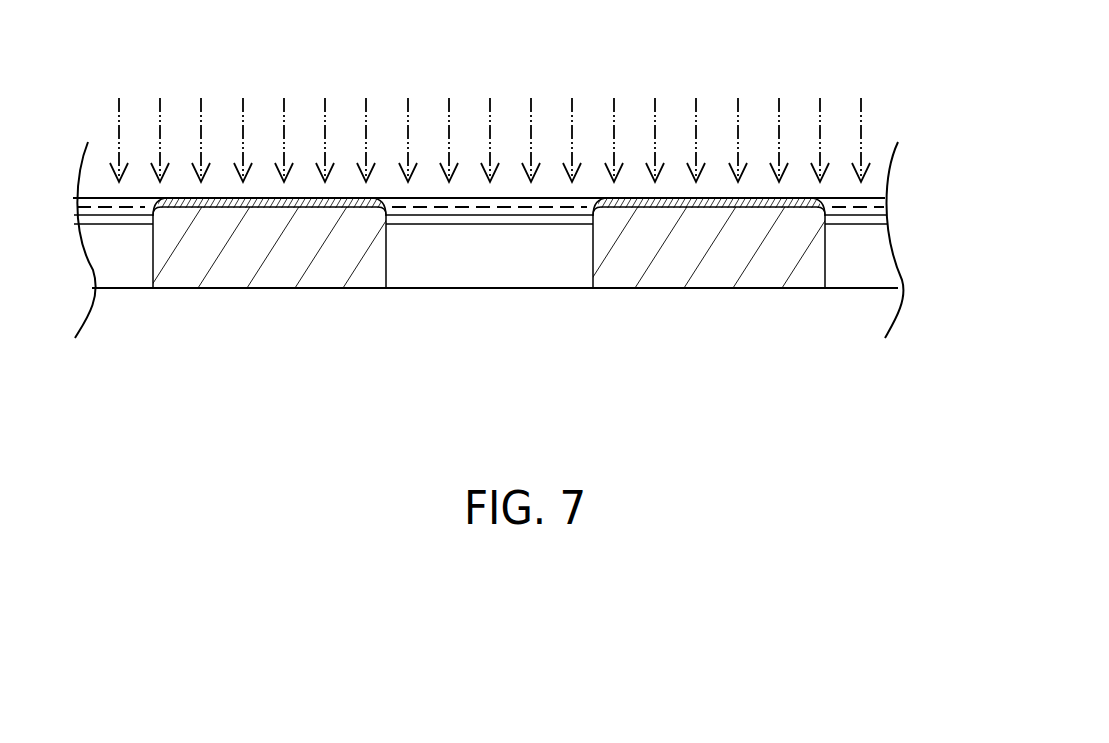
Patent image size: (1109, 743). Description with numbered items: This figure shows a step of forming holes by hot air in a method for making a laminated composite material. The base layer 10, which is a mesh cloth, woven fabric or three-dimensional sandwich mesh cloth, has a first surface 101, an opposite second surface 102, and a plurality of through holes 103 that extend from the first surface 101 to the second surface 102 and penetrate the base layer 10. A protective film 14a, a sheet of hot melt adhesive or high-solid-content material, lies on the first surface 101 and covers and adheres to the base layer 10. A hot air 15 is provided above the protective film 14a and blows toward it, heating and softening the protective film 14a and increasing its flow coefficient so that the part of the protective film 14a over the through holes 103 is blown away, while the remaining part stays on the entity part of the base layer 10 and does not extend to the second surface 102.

The base layer 10 is at (900, 210).
The protective film 14a is at (717, 200).
The hot air 15 is at (820, 108).
The first surface 101 is at (547, 205).
The second surface 102 is at (552, 288).
The through holes 103 is at (433, 237).